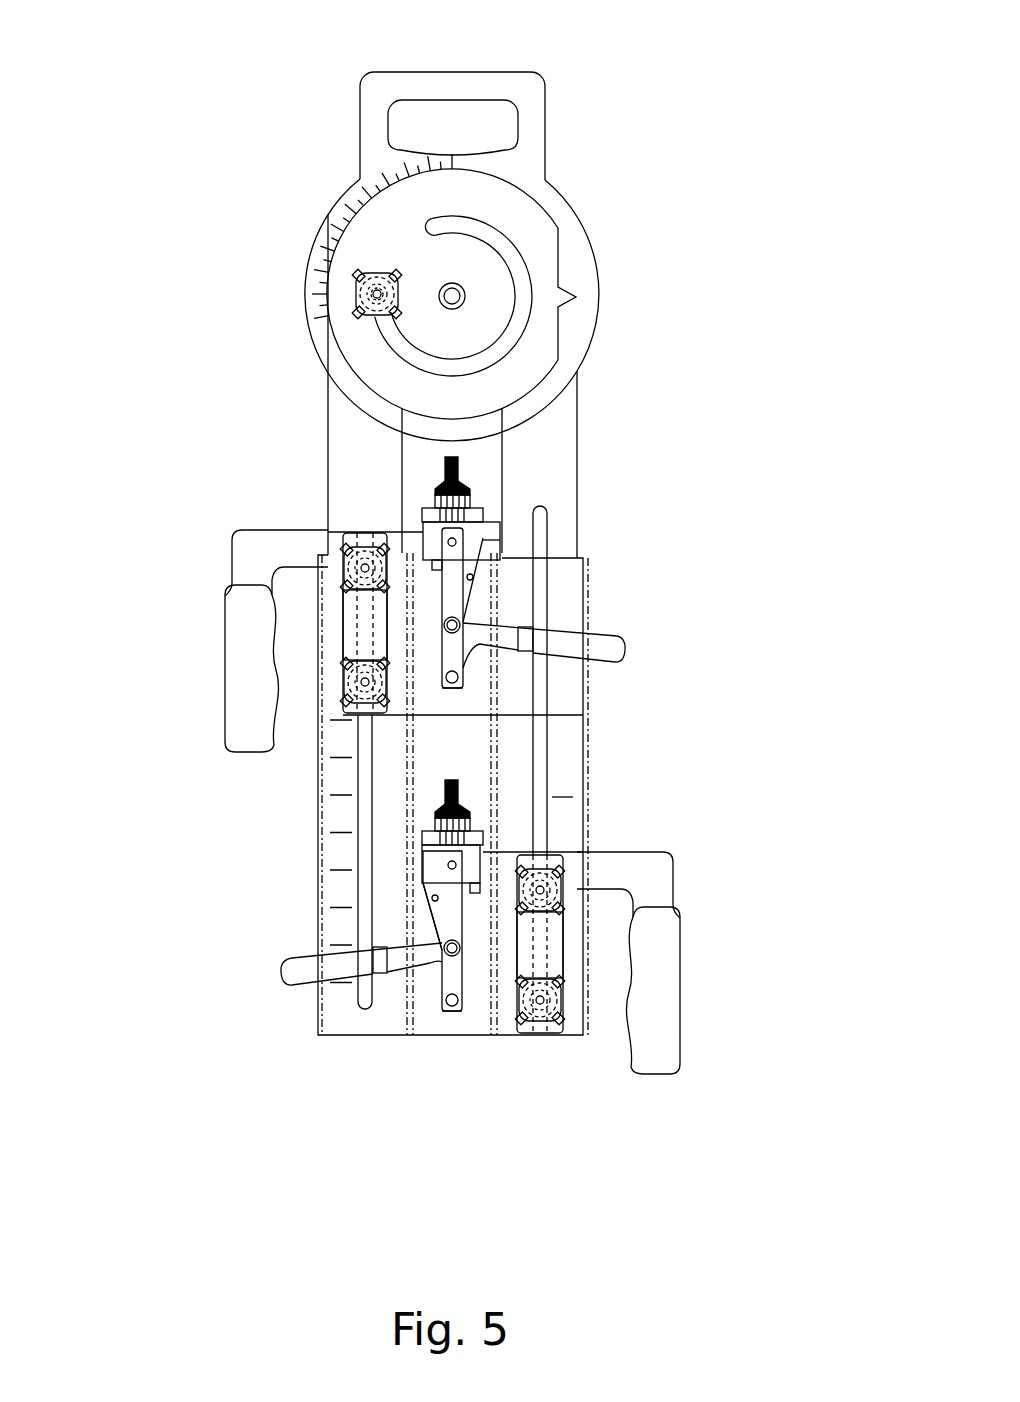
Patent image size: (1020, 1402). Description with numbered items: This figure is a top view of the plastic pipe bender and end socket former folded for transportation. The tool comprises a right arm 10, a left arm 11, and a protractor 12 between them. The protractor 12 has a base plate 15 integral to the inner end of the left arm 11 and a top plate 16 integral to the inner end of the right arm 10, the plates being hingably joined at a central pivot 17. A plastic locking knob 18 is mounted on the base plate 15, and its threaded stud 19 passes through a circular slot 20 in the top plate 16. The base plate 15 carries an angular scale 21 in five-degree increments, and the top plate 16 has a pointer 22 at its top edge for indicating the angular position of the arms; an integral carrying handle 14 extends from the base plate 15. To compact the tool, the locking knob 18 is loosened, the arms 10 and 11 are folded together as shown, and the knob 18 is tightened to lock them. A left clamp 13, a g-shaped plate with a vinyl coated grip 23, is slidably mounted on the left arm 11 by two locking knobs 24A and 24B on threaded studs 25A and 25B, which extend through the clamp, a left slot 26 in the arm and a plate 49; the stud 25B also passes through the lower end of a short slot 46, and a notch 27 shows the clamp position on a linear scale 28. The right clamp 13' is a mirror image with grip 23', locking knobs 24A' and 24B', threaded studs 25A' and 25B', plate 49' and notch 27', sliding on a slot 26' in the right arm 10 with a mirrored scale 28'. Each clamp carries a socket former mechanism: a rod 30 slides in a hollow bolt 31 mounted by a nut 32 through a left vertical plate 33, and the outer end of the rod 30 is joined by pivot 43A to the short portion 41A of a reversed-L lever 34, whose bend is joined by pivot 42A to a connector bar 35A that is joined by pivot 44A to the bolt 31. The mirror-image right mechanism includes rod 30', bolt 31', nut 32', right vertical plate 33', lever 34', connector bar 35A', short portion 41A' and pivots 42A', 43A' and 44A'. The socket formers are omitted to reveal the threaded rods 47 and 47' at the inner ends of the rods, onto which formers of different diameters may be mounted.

The right arm 10 is at (326, 456).
The left arm 11 is at (580, 432).
The protractor 12 is at (316, 231).
The left clamp 13 is at (453, 834).
The right clamp 13' is at (455, 652).
The carrying handle 14 is at (428, 70).
The base plate 15 is at (567, 202).
The top plate 16 is at (493, 177).
The central pivot 17 is at (459, 299).
The locking knob 18 is at (355, 278).
The threaded stud 19 is at (353, 308).
The circular slot 20 is at (508, 237).
The angular scale 21 is at (350, 196).
The pointer 22 is at (567, 293).
The grip 23 is at (680, 1013).
The grip 23' is at (218, 676).
The locking knob 24A is at (653, 852).
The locking knob 24A' is at (240, 524).
The locking knob 24B is at (624, 1004).
The locking knob 24B' is at (286, 675).
The threaded stud 25A is at (629, 875).
The threaded stud 25A' is at (265, 547).
The threaded stud 25B is at (628, 1002).
The threaded stud 25B' is at (266, 683).
The left slot 26 is at (618, 786).
The slot 26' is at (307, 1029).
The notch 27 is at (628, 944).
The notch 27' is at (270, 623).
The linear scale 28 is at (589, 680).
The scale 28' is at (303, 858).
The rod 30 is at (301, 935).
The rod 30' is at (603, 580).
The hollow bolt 31 is at (581, 825).
The bolt 31' is at (377, 481).
The nut 32 is at (362, 845).
The nut 32' is at (581, 493).
The left vertical plate 33 is at (336, 869).
The right vertical plate 33' is at (554, 541).
The lever 34 is at (318, 983).
The lever 34' is at (605, 647).
The connector bar 35A is at (323, 931).
The connector bar 35A' is at (572, 608).
The short portion 41A is at (352, 1069).
The short portion 41A' is at (572, 686).
The pivot 42A is at (349, 1027).
The pivot 42A' is at (573, 629).
The pivot 43A is at (410, 1076).
The pivot 43A' is at (597, 715).
The pivot 44A is at (342, 891).
The pivot 44A' is at (603, 545).
The short slot 46 is at (497, 987).
The threaded rod 47 is at (330, 812).
The threaded rod 47' is at (560, 467).
The plate 49 is at (488, 964).
The plate 49' is at (421, 640).